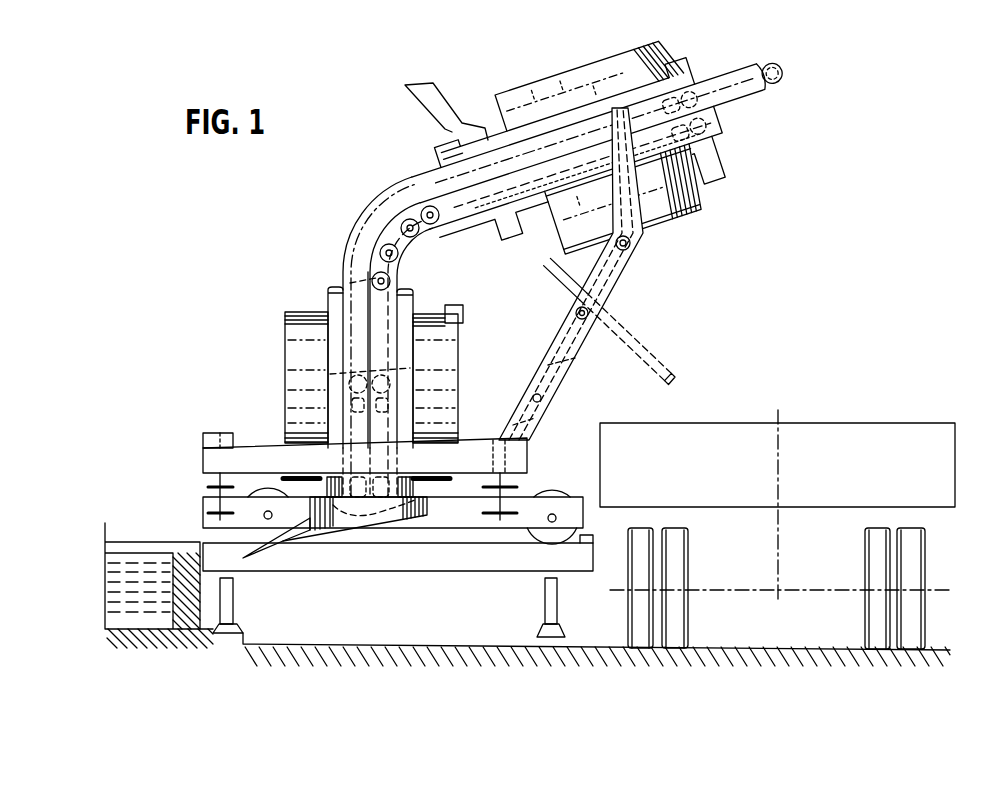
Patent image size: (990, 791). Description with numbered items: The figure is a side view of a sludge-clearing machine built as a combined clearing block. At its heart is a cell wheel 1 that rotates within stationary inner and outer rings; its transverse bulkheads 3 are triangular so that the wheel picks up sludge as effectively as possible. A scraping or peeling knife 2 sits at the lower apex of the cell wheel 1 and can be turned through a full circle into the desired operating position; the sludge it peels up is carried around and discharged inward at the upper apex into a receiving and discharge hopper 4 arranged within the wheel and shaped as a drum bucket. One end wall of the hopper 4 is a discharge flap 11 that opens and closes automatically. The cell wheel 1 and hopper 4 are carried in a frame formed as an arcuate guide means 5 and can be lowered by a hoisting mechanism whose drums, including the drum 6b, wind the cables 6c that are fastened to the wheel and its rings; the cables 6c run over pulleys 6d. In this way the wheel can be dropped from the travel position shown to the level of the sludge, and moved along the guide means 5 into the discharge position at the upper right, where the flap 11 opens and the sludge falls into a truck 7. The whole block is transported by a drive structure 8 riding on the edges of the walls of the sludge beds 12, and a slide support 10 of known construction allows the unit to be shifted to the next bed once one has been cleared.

The cell wheel 1 is at (330, 292).
The scraping or peeling knife 2 is at (438, 98).
The transverse bulkheads 3 is at (380, 508).
The receiving and discharge hopper 4 is at (292, 343).
The arcuate guide means 5 is at (397, 198).
The drum 6b is at (785, 74).
The cables 6c is at (755, 88).
The pulleys 6d is at (404, 256).
The truck 7 is at (844, 462).
The drive structure 8 is at (525, 510).
The slide support 10 is at (461, 563).
The discharge flap 11 is at (628, 333).
The sludge beds 12 is at (117, 582).